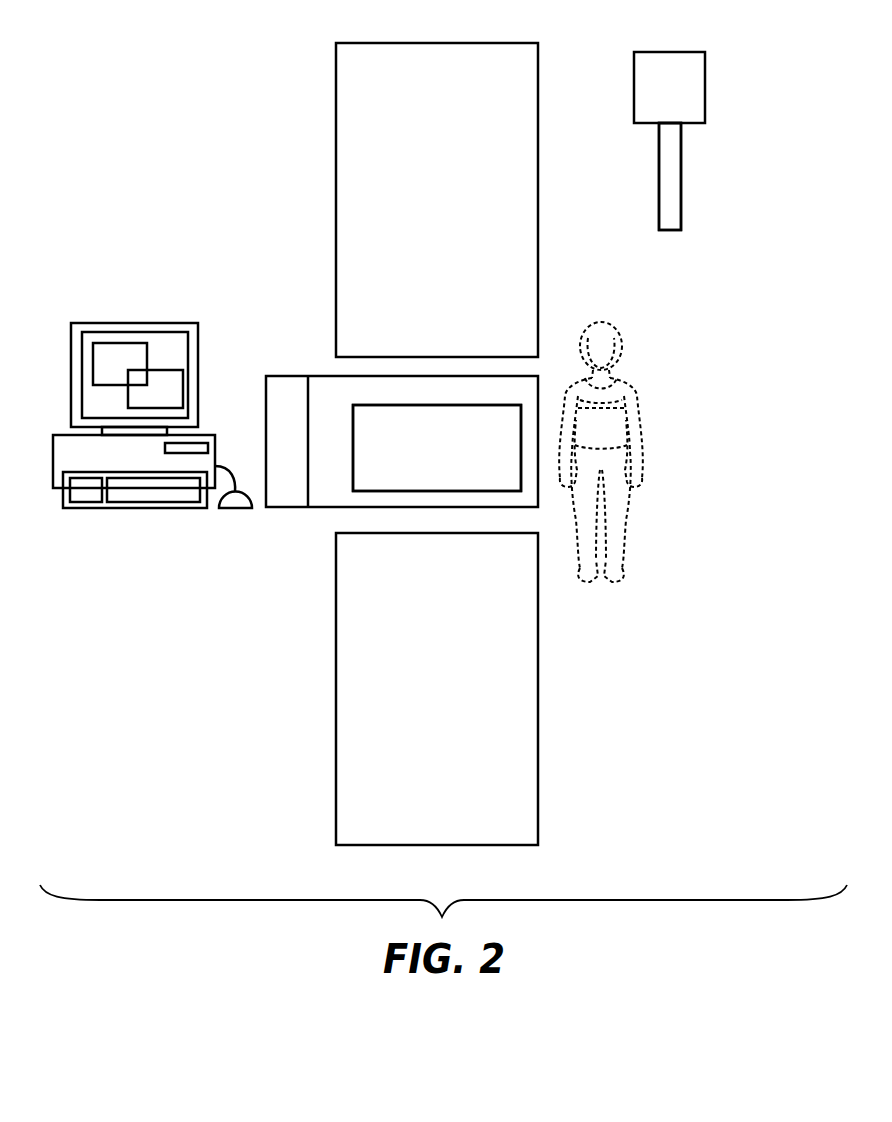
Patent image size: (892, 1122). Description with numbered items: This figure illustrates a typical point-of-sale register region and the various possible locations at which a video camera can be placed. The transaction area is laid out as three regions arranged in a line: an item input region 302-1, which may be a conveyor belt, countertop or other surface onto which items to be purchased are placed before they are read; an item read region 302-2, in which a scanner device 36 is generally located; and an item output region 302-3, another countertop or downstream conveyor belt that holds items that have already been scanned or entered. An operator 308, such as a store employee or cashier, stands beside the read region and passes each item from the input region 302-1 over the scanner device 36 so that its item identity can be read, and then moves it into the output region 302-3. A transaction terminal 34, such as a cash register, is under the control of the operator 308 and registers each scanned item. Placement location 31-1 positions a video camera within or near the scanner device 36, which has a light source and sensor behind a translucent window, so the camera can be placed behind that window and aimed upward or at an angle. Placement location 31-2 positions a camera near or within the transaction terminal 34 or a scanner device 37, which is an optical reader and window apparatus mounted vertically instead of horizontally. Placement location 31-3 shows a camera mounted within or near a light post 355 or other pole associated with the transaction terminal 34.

The item input region 302-1 is at (437, 200).
The item read region 302-2 is at (402, 441).
The item output region 302-3 is at (437, 689).
The placement location 31-1 is at (353, 405).
The placement location 31-2 is at (152, 424).
The placement location 31-3 is at (695, 60).
The transaction terminal 34 is at (83, 323).
The scanner device 36 is at (437, 448).
The scanner device 37 is at (292, 441).
The light post 355 is at (668, 168).
The operator 308 is at (601, 452).